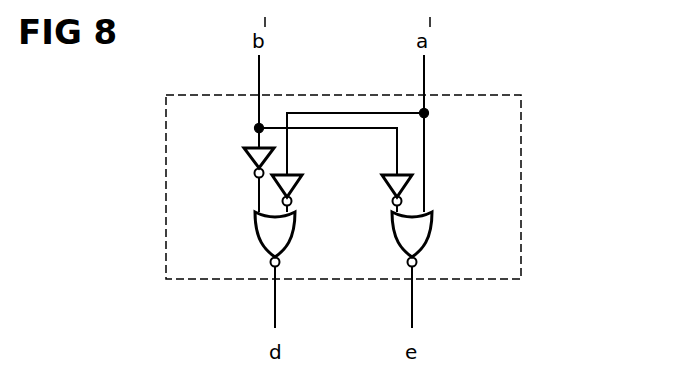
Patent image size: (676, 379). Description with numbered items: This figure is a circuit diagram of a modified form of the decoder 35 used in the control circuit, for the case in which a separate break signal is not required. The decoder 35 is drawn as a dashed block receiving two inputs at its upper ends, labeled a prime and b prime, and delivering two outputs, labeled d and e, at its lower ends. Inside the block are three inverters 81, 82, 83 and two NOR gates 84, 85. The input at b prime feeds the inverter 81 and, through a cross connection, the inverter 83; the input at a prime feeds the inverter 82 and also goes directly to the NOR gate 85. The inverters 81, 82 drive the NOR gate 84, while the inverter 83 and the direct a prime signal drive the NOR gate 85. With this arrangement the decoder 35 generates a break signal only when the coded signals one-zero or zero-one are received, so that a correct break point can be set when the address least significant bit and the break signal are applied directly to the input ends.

The decoder 35 is at (522, 232).
The inverter 81 is at (246, 160).
The inverter 82 is at (300, 179).
The inverter 83 is at (383, 183).
The NOR gate 84 is at (294, 233).
The NOR gate 85 is at (432, 233).